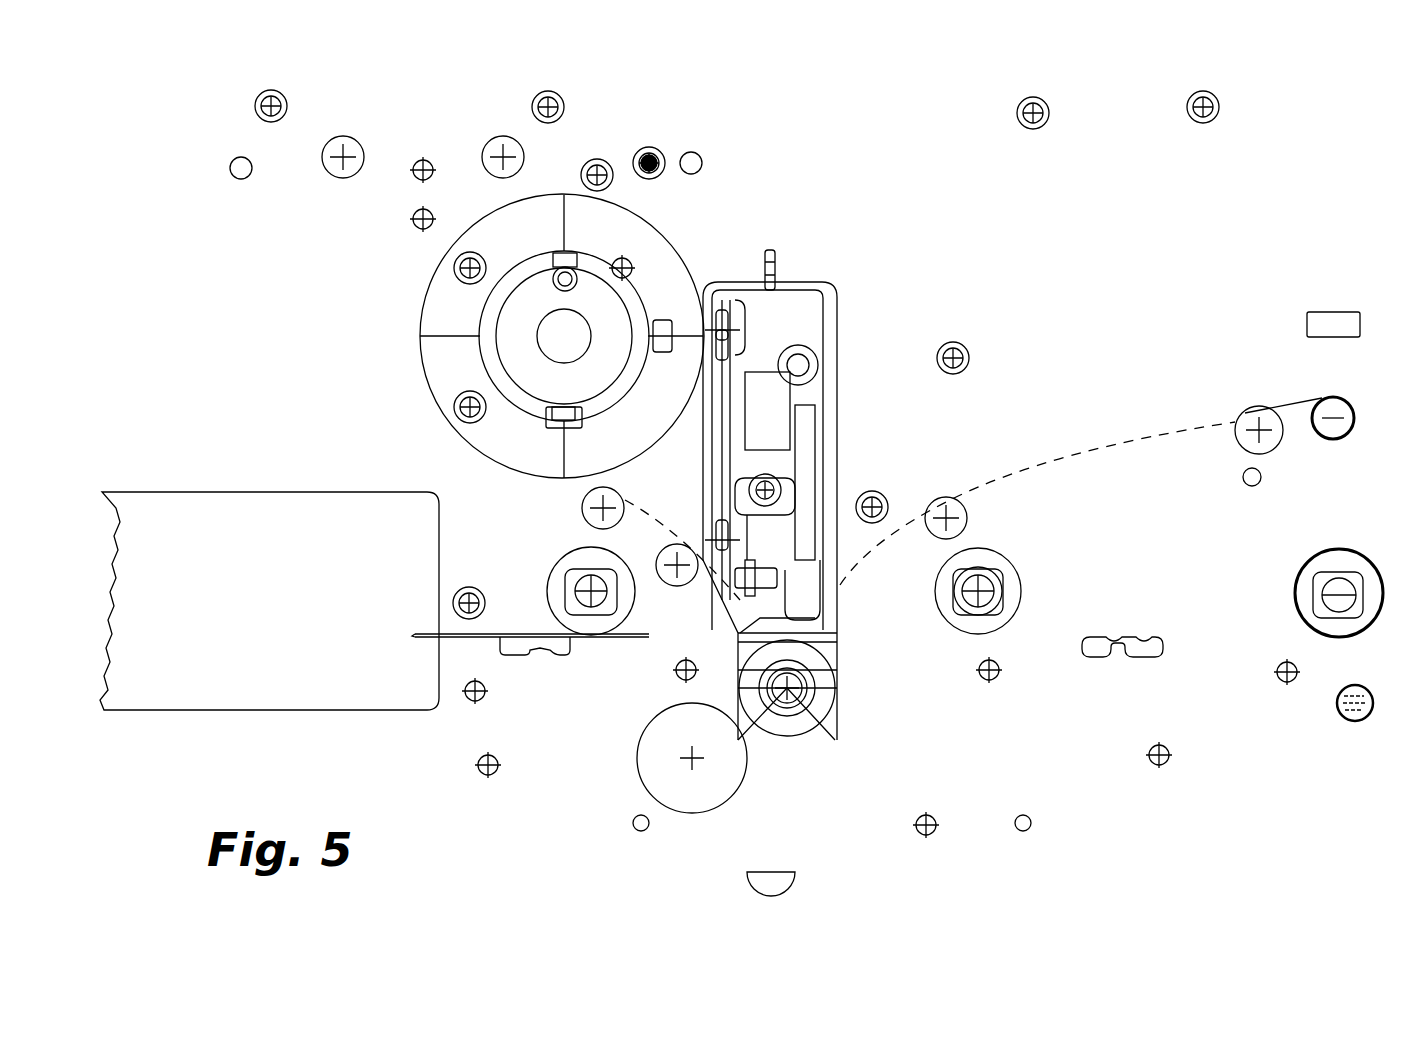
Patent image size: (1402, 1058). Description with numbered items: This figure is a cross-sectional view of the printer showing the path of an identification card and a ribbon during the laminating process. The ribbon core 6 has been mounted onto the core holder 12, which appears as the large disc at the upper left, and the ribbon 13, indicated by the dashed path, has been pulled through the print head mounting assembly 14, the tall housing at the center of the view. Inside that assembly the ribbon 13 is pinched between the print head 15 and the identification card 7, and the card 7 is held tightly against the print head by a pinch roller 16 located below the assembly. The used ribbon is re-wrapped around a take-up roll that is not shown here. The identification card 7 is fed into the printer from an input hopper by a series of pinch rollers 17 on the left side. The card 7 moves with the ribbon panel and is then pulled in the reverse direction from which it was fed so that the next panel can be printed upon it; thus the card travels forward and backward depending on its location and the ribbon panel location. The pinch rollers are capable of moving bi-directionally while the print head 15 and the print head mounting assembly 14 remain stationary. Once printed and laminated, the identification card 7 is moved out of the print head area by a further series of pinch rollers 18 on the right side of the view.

The ribbon core 6 is at (608, 325).
The identification card 7 is at (428, 636).
The core holder 12 is at (559, 335).
The ribbon 13 is at (590, 488).
The print head mounting assembly 14 is at (830, 310).
The print head 15 is at (800, 580).
The pinch roller 16 is at (797, 735).
The pinch rollers 17 is at (566, 576).
The pinch rollers 18 is at (1002, 578).